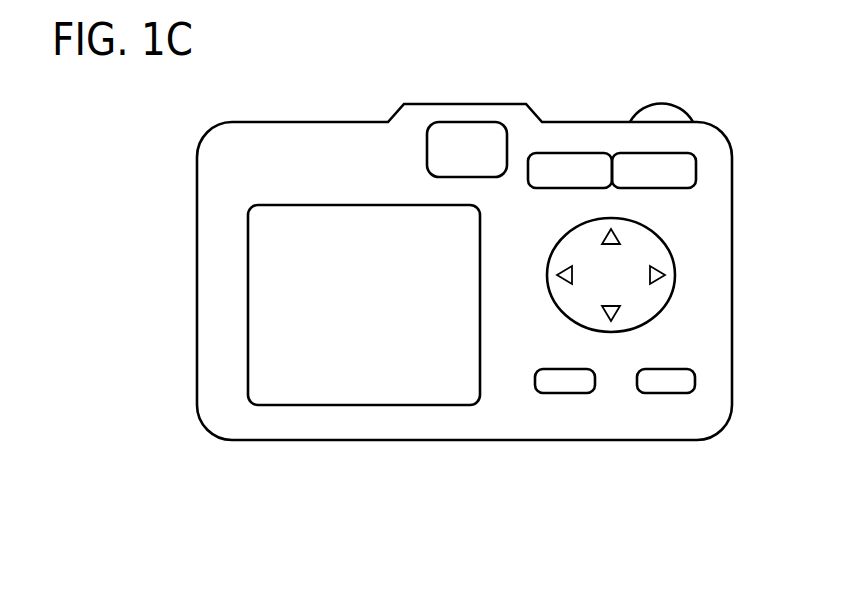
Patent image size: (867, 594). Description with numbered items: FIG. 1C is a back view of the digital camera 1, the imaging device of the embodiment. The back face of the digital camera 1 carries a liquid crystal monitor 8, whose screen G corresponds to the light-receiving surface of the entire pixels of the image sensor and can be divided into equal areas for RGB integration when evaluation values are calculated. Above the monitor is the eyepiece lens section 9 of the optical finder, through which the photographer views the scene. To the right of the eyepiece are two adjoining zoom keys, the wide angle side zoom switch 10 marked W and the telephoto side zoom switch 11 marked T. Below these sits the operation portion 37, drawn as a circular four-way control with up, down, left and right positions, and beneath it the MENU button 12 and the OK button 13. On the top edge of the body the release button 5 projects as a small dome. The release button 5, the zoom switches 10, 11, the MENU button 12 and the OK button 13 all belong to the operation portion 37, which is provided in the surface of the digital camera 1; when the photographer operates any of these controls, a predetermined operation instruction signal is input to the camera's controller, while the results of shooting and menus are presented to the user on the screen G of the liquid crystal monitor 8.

The digital camera 1 is at (737, 91).
The release button 5 is at (660, 104).
The screen G is at (303, 212).
The liquid crystal monitor 8 is at (359, 392).
The eyepiece lens section 9 is at (427, 148).
The wide angle side zoom switch 10 is at (553, 190).
The telephoto side zoom switch 11 is at (670, 190).
The MENU button 12 is at (557, 369).
The OK button 13 is at (672, 369).
The operation portion 37 is at (660, 252).